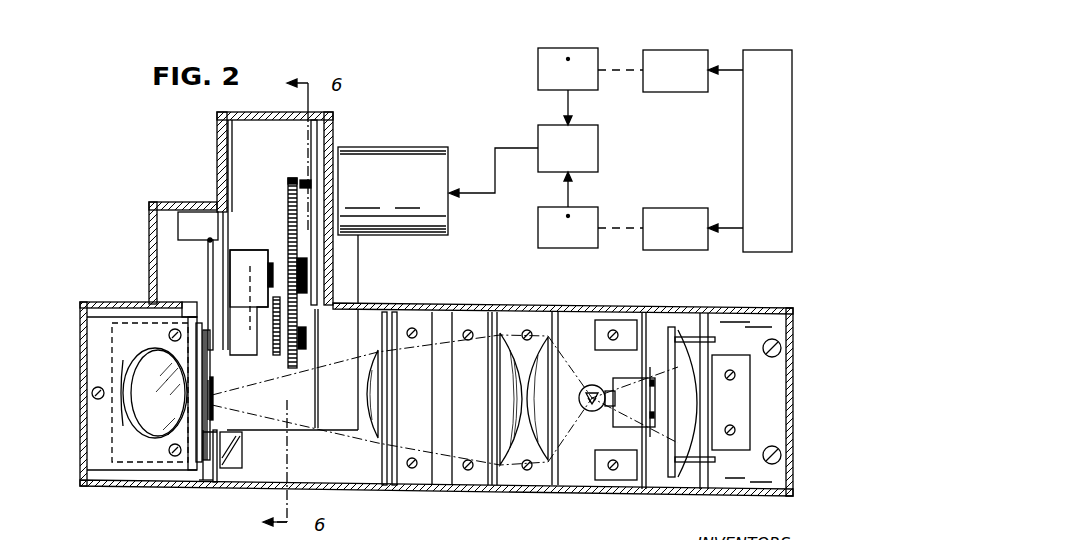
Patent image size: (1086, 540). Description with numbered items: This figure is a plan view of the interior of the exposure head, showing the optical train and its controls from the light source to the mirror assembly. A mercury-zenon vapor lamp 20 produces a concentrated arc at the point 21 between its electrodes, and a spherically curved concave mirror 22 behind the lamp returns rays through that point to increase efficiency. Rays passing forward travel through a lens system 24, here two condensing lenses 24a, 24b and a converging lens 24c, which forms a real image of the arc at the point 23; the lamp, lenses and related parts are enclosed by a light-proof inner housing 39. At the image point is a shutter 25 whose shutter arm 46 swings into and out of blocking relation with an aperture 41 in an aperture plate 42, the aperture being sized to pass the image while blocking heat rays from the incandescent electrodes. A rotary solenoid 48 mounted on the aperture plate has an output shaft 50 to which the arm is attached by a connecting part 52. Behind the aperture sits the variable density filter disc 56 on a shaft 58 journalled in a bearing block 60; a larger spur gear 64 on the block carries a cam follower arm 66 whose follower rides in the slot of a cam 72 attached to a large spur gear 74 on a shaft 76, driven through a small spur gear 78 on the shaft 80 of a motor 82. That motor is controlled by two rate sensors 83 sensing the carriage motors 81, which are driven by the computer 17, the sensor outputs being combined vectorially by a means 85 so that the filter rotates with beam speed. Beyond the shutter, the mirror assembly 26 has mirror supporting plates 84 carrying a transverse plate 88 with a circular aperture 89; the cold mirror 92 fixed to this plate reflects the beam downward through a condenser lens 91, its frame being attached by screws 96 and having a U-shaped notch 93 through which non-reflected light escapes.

The computer 17 is at (768, 50).
The mercury-zenon vapor lamp 20 is at (589, 380).
The arc point 21 is at (590, 411).
The spherically curved concave mirror 22 is at (688, 388).
The real image point 23 is at (210, 388).
The lens system 24 is at (523, 300).
The condensing lens 24a is at (537, 443).
The condensing lens 24b is at (508, 447).
The converging lens 24c is at (373, 430).
The shutter 25 is at (214, 501).
The mirror assembly 26 is at (92, 492).
The light-proof inner housing 39 is at (440, 304).
The aperture 41 is at (205, 402).
The aperture plate 42 is at (215, 382).
The shutter arm 46 is at (212, 410).
The rotary solenoid 48 is at (227, 482).
The output shaft 50 is at (242, 448).
The connecting part 52 is at (207, 440).
The variable density filter disc 56 is at (208, 272).
The shaft 58 is at (249, 302).
The bearing block 60 is at (240, 250).
The spur gear 64 is at (277, 358).
The cam follower arm 66 is at (270, 262).
The cam 72 is at (288, 222).
The large spur gear 74 is at (297, 313).
The shaft 76 is at (307, 275).
The small spur gear 78 is at (296, 178).
The motor shaft 80 is at (314, 188).
The carriage motor 81 is at (675, 50).
The motor 82 is at (418, 158).
The rate sensor 83 is at (573, 48).
The mirror supporting plate 84 is at (93, 302).
The combining means 85 is at (598, 148).
The transverse plate 88 is at (88, 378).
The aperture 89 is at (127, 398).
The condenser lens 91 is at (209, 418).
The mirror 92 is at (203, 395).
The U-shaped notch 93 is at (131, 368).
The screws 96 is at (92, 393).